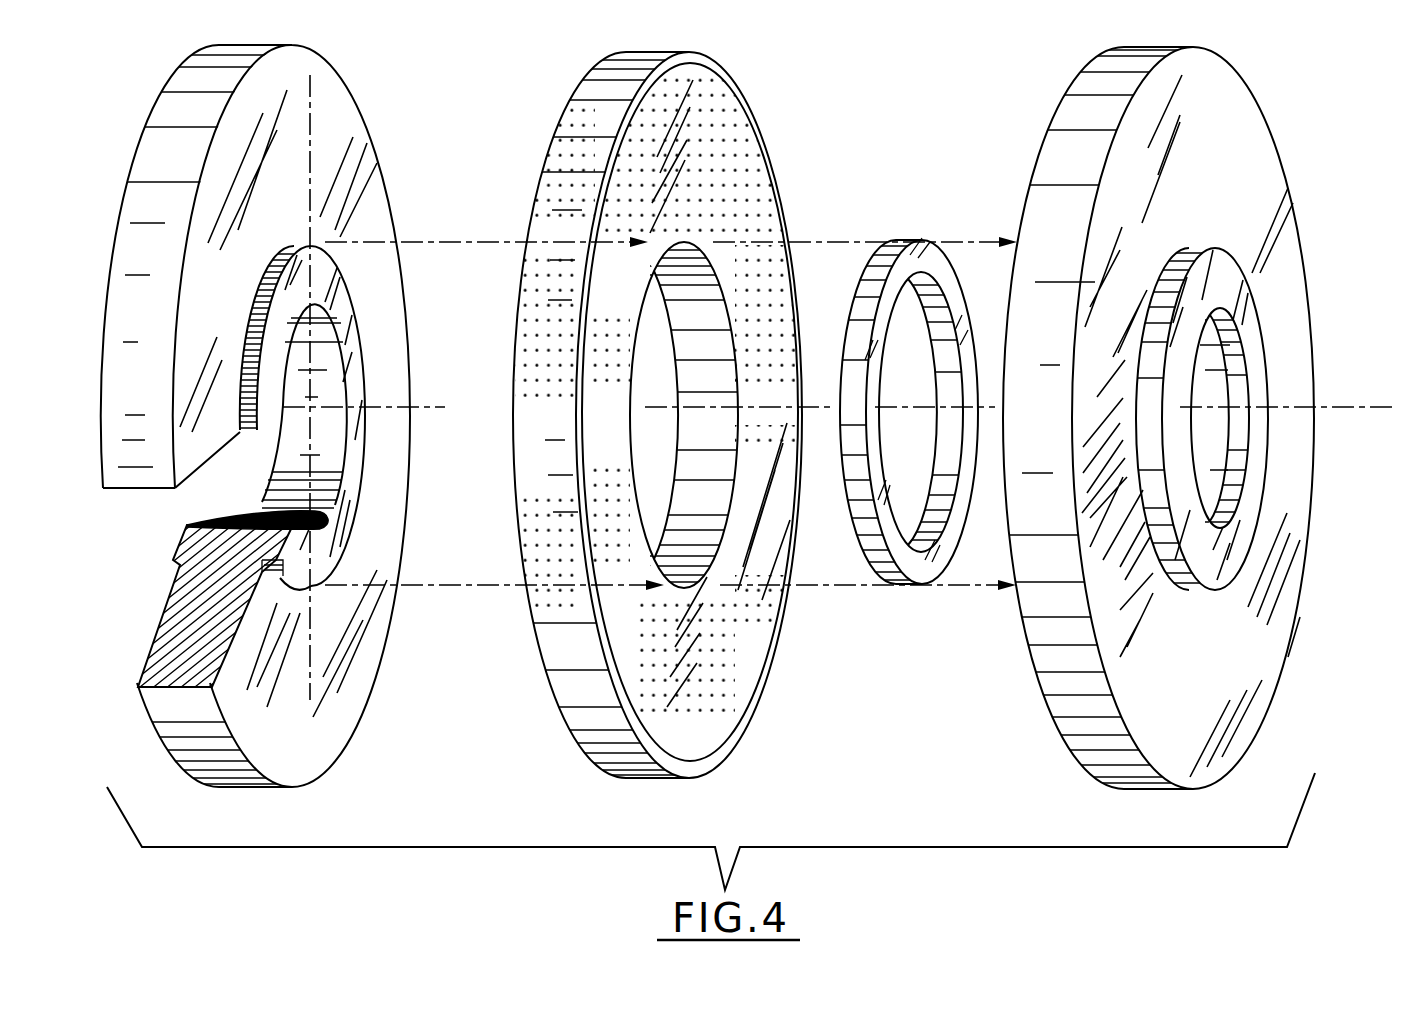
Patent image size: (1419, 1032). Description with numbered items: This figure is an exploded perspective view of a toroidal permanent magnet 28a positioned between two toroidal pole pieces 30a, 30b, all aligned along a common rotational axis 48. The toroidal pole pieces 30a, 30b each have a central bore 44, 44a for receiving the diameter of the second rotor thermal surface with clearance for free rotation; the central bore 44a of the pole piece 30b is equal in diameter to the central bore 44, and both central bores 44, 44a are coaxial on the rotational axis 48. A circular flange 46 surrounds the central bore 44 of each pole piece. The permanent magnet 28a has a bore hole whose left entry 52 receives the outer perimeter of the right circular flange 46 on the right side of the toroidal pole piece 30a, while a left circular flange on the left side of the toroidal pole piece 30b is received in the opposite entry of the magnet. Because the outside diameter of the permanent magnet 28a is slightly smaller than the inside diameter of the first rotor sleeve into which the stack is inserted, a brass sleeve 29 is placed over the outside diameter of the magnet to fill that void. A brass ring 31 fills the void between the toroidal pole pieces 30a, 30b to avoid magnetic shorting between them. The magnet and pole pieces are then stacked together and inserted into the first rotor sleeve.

The toroidal permanent magnet 28a is at (712, 663).
The brass sleeve 29 is at (780, 197).
The toroidal pole piece 30a is at (322, 722).
The toroidal pole piece 30b is at (1217, 678).
The brass ring 31 is at (896, 238).
The central bore 44 is at (327, 450).
The central bore 44a is at (1232, 350).
The circular flange 46 is at (355, 297).
The rotational axis 48 is at (1372, 407).
The left entry 52 is at (690, 330).